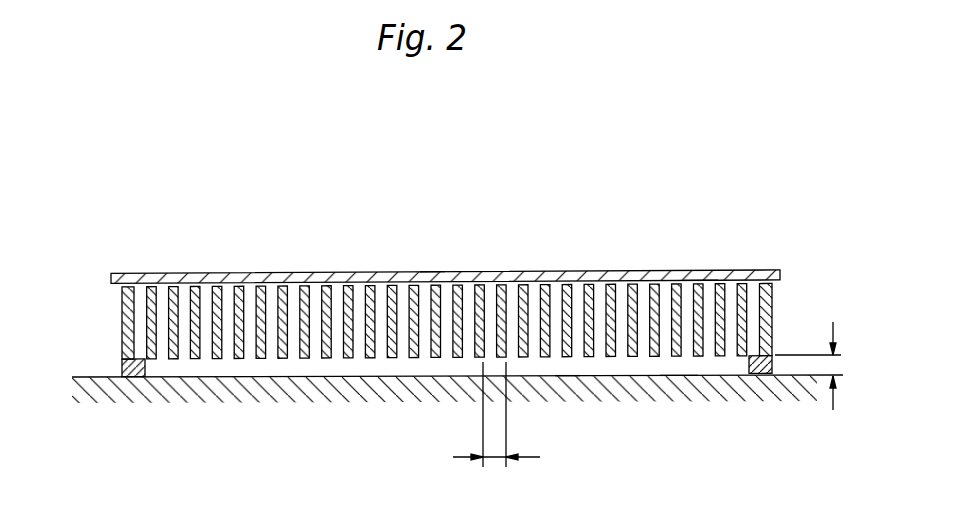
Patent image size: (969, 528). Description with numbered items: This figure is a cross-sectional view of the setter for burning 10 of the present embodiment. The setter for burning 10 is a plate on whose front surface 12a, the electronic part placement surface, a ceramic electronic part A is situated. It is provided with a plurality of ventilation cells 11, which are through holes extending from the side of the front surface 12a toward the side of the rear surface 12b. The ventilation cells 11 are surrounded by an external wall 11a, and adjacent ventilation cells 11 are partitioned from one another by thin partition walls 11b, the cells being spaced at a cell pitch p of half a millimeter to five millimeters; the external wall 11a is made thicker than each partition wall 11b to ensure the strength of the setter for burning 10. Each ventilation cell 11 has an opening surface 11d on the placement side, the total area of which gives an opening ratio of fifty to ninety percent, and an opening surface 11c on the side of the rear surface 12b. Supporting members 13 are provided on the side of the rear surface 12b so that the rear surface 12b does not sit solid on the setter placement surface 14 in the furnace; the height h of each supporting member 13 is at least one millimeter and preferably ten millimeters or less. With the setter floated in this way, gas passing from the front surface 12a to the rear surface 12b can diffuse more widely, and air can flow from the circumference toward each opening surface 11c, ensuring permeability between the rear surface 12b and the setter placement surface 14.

The setter for burning 10 is at (439, 326).
The ventilation cells 11 is at (447, 328).
The external wall 11a is at (122, 294).
The partition walls 11b is at (545, 286).
The opening surface 11c is at (689, 378).
The opening surface 11d is at (710, 281).
The front surface 12a is at (445, 233).
The rear surface 12b is at (302, 362).
The supporting members 13 is at (134, 378).
The setter placement surface 14 is at (571, 373).
The ceramic electronic part A is at (432, 273).
The height of supporting member h is at (838, 363).
The cell pitch p is at (494, 458).